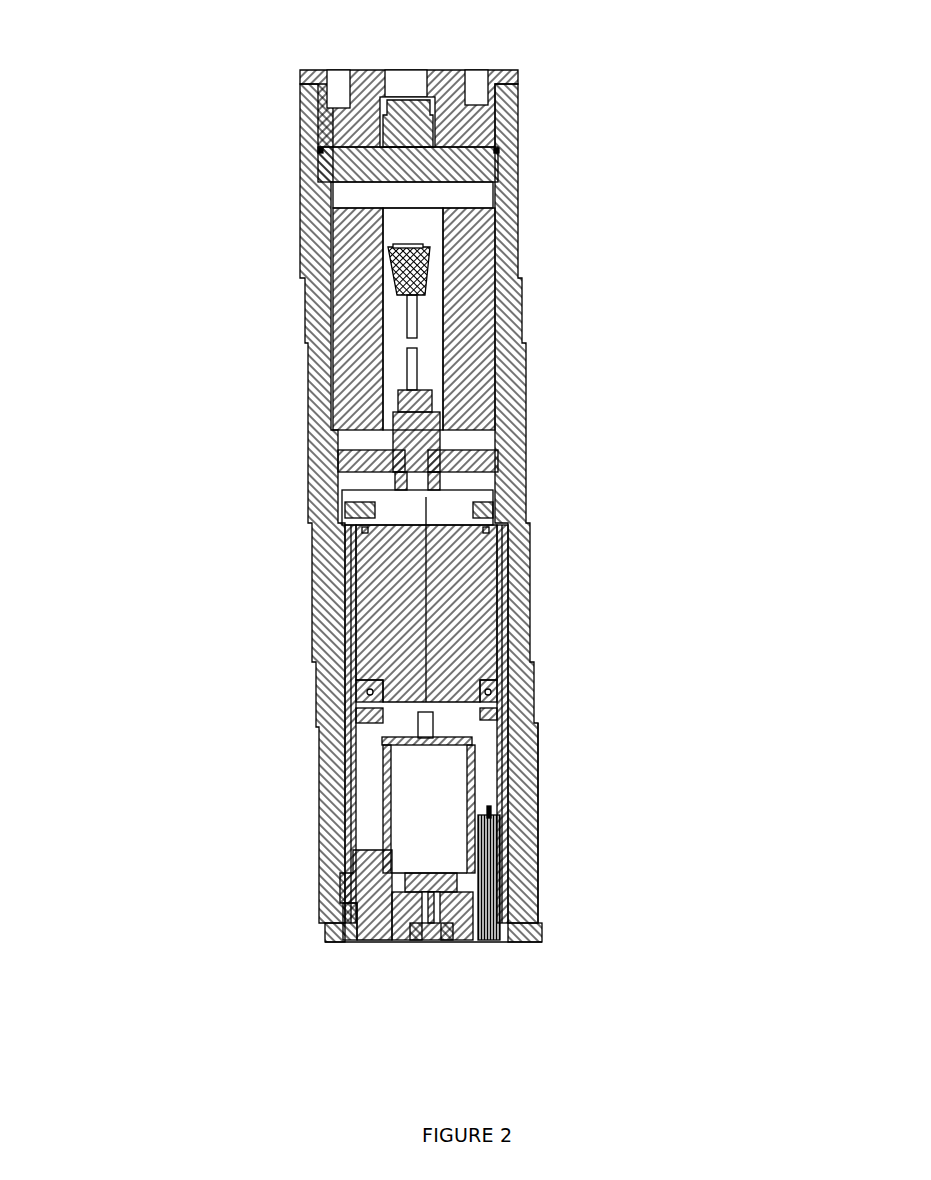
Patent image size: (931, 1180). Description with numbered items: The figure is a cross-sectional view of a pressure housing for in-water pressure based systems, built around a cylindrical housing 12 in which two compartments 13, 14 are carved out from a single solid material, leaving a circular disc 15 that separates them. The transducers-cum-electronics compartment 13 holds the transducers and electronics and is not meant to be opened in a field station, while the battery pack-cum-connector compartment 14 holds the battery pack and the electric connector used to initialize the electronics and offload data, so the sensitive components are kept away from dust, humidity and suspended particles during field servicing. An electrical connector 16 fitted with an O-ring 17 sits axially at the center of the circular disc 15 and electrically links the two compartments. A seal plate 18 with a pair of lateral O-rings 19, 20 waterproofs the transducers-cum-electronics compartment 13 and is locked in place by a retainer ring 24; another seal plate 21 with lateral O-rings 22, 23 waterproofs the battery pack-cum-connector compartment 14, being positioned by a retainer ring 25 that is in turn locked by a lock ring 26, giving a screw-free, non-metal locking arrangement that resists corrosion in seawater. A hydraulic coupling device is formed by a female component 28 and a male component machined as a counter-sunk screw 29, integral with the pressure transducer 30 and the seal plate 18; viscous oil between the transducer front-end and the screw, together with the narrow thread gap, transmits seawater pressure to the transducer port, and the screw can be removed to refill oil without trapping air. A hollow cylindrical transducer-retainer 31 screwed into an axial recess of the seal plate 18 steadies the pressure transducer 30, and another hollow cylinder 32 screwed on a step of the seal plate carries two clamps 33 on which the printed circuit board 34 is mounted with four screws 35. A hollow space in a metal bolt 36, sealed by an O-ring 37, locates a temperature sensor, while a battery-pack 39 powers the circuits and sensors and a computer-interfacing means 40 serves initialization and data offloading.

The cylindrical housing 12 is at (518, 206).
The transducers-cum-electronics compartment 13 is at (477, 742).
The battery pack-cum-connector compartment 14 is at (398, 232).
The circular disc 15 is at (352, 462).
The electrical connector 16 is at (432, 405).
The O-ring 17 is at (437, 445).
The seal plate 18 is at (325, 930).
The lateral O-ring 19 is at (537, 868).
The lateral O-ring 20 is at (343, 890).
The seal plate 21 is at (340, 158).
The lateral O-ring 22 is at (497, 160).
The lateral O-ring 23 is at (320, 183).
The retainer ring 24 is at (345, 943).
The retainer ring 25 is at (518, 115).
The lock ring 26 is at (517, 72).
The female component 28 is at (460, 943).
The counter-sunk screw 29 is at (433, 943).
The pressure transducer 30 is at (425, 786).
The transducer-retainer 31 is at (473, 775).
The hollow cylinder 32 is at (503, 540).
The clamp 33 is at (345, 503).
The printed circuit board 34 is at (380, 610).
The screw 35 is at (362, 525).
The metal bolt 36 is at (470, 840).
The O-ring 37 is at (538, 943).
The battery-pack 39 is at (335, 281).
The computer-interfacing means 40 is at (430, 262).